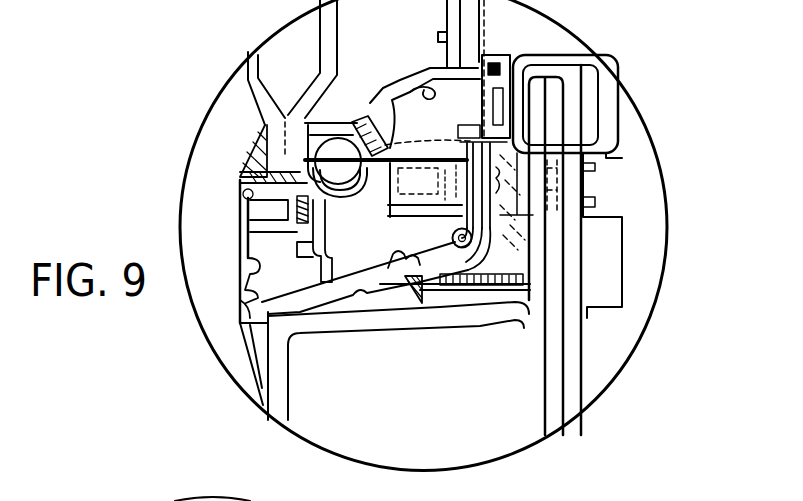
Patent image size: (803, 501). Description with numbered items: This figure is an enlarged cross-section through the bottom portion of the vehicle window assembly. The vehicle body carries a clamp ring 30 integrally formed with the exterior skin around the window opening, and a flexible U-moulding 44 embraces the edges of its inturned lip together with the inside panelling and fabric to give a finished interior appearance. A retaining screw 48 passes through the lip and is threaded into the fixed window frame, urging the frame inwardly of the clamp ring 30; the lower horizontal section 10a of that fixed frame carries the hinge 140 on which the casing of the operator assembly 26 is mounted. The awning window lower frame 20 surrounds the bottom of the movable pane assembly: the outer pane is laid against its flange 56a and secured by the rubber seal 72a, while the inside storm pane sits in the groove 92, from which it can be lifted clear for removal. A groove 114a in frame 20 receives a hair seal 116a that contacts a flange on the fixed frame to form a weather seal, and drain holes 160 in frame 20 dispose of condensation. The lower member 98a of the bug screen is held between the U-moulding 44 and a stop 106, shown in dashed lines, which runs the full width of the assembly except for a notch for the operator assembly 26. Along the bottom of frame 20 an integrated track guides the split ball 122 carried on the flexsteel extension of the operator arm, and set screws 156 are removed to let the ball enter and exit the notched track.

The lower horizontal section of fixed frame 10a is at (343, 300).
The awning window lower frame 20 is at (405, 76).
The operator assembly 26 is at (607, 182).
The clamp ring 30 is at (447, 327).
The U-moulding 44 is at (588, 112).
The retaining screw 48 is at (507, 313).
The flange of awning window frame 56a is at (246, 90).
The rubber seal 72a is at (262, 143).
The groove 92 is at (466, 45).
The lower member of bug screen 98a is at (505, 97).
The stop 106 is at (477, 128).
The groove 114a is at (250, 206).
The hair seal 116a is at (296, 198).
The split ball 122 is at (305, 160).
The hinge 140 is at (450, 237).
The set screw 156 is at (380, 105).
The drain holes 160 is at (330, 277).